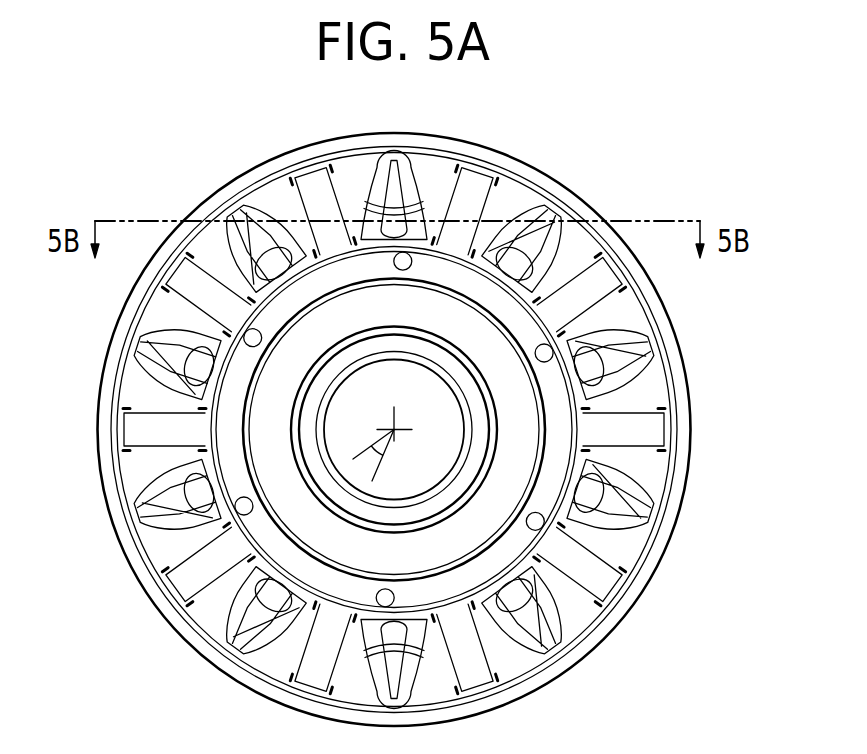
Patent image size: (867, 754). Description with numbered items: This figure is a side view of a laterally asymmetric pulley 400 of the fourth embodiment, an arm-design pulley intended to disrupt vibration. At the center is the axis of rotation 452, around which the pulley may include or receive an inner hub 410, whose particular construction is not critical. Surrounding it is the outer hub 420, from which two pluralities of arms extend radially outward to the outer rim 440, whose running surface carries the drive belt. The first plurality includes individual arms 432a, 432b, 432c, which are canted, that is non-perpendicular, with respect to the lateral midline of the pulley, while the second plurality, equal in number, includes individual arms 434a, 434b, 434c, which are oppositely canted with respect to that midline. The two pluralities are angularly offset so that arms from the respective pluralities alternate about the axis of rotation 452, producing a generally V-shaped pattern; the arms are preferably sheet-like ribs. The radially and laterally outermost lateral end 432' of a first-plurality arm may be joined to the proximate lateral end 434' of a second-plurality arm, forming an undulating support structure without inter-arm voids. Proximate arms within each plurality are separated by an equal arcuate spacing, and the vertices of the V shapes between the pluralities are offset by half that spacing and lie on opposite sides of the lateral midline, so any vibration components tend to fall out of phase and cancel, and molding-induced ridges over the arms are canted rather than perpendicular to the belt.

The laterally asymmetric pulley 400 is at (120, 123).
The inner hub 410 is at (522, 412).
The outer hub 420 is at (633, 285).
The arm of the first plurality of arms 432a is at (507, 192).
The arm of the first plurality of arms 432b is at (353, 173).
The arm of the first plurality of arms 432c is at (210, 253).
The lateral end of a first-plurality arm 432' is at (119, 364).
The arm of the second plurality of arms 434a is at (447, 177).
The arm of the second plurality of arms 434b is at (280, 200).
The arm of the second plurality of arms 434c is at (167, 310).
The lateral end of a second-plurality arm 434' is at (114, 359).
The outer rim 440 is at (682, 463).
The axis of rotation 452 is at (394, 429).